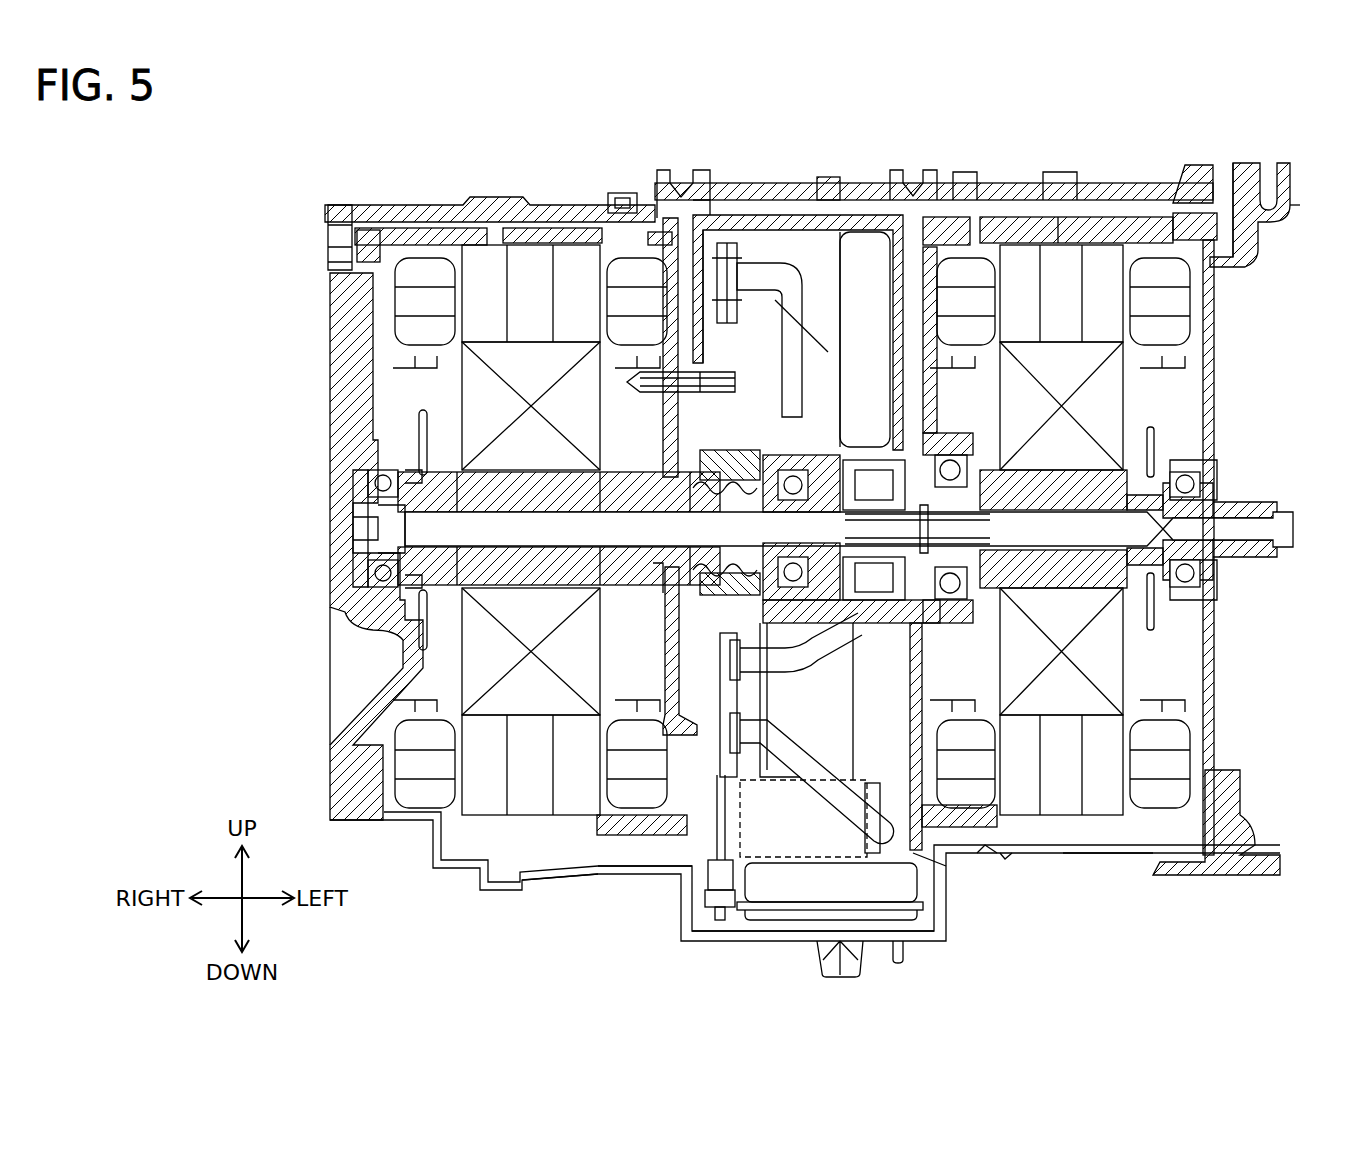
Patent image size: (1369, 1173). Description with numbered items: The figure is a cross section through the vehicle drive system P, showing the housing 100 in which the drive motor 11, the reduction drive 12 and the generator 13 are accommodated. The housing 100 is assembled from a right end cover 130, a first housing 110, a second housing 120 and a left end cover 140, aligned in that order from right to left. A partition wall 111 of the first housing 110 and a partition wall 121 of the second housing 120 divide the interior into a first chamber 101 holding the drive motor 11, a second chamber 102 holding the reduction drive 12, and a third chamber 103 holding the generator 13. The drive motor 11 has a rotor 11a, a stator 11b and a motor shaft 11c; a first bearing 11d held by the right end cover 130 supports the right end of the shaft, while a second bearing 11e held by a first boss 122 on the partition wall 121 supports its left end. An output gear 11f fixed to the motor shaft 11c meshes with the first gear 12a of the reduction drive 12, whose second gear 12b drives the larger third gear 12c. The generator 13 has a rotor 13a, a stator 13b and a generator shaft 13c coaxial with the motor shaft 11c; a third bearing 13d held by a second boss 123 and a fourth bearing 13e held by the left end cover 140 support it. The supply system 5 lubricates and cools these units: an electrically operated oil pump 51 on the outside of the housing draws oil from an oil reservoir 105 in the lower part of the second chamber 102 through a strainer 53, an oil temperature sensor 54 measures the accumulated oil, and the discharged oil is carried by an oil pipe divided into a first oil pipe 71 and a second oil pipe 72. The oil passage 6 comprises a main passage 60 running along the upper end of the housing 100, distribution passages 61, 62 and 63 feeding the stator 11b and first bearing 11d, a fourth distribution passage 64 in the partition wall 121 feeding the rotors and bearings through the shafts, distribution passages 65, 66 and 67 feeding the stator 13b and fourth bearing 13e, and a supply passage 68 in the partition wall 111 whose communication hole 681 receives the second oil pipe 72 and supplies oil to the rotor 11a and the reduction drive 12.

The housing 100 is at (1262, 362).
The supply system 5 is at (946, 915).
The oil passage 6 is at (863, 170).
The main passage 60 is at (550, 216).
The first distribution passage 61 is at (336, 238).
The second distribution passage 62 is at (460, 232).
The third distribution passage 63 is at (622, 232).
The fourth distribution passage 64 is at (917, 200).
The fifth distribution passage 65 is at (983, 200).
The sixth distribution passage 66 is at (1058, 215).
The seventh distribution passage 67 is at (1240, 168).
The supply passage 68 is at (668, 200).
The communication hole 681 is at (710, 272).
The second chamber 102 is at (795, 238).
The drive system P is at (1318, 207).
The drive motor 11 is at (473, 817).
The rotor 11a is at (470, 415).
The stator 11b is at (556, 240).
The motor shaft 11c is at (517, 590).
The first bearing 11d is at (357, 613).
The second bearing 11e is at (845, 612).
The output gear 11f is at (720, 460).
The reduction drive 12 is at (800, 430).
The partition wall 121 is at (846, 256).
The first boss 122 is at (828, 450).
The first gear 12a is at (660, 598).
The second gear 12b is at (715, 630).
The third gear 12c is at (853, 676).
The generator 13 is at (1108, 817).
The rotor 13a is at (986, 365).
The stator 13b is at (1102, 245).
The generator shaft 13c is at (1068, 590).
The third bearing 13d is at (978, 632).
The fourth bearing 13e is at (1200, 595).
The second boss 123 is at (965, 416).
The second oil pipe 72 is at (808, 312).
The partition wall 111 is at (712, 332).
The first oil pipe 71 is at (808, 770).
The oil pump 51 is at (862, 800).
The strainer 53 is at (793, 870).
The oil temperature sensor 54 is at (700, 905).
The oil reservoir 105 is at (736, 922).
The first chamber 101 is at (594, 856).
The first housing 110 is at (548, 880).
The second housing 120 is at (1002, 862).
The third chamber 103 is at (1068, 858).
The right end cover 130 is at (375, 827).
The left end cover 140 is at (1210, 862).